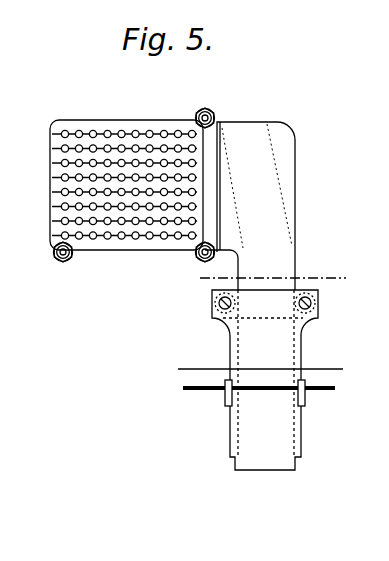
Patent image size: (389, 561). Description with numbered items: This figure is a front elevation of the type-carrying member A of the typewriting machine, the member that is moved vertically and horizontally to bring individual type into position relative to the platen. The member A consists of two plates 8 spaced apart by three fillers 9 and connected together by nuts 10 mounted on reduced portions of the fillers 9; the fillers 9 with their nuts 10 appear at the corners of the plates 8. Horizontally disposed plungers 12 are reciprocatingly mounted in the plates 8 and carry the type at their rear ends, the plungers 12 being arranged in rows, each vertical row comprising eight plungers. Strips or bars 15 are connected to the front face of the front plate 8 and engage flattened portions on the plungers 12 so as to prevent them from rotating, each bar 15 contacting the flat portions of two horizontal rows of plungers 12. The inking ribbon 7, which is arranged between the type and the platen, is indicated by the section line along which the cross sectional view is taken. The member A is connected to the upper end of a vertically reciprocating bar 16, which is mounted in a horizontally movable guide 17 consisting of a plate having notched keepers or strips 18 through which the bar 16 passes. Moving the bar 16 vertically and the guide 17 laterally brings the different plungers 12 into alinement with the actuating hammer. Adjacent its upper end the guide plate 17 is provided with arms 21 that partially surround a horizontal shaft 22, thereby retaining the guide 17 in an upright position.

The type-carrying member A is at (25, 179).
The inking ribbon 7 is at (268, 280).
The plates 8 is at (138, 251).
The fillers 9 is at (198, 112).
The nuts 10 is at (214, 113).
The plungers 12 is at (121, 131).
The strips or bars 15 is at (52, 202).
The vertically reciprocating bar 16 is at (250, 206).
The guide 17 is at (265, 380).
The notched keepers or strips 18 is at (226, 333).
The arms 21 is at (298, 400).
The horizontal shaft 22 is at (323, 382).